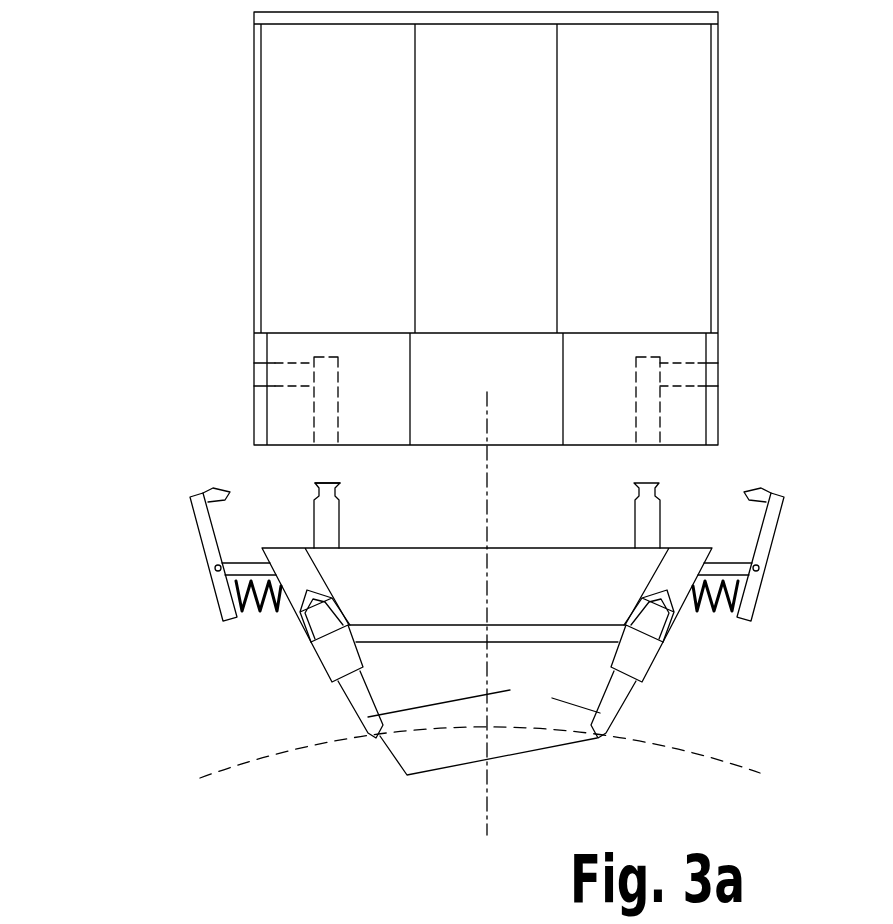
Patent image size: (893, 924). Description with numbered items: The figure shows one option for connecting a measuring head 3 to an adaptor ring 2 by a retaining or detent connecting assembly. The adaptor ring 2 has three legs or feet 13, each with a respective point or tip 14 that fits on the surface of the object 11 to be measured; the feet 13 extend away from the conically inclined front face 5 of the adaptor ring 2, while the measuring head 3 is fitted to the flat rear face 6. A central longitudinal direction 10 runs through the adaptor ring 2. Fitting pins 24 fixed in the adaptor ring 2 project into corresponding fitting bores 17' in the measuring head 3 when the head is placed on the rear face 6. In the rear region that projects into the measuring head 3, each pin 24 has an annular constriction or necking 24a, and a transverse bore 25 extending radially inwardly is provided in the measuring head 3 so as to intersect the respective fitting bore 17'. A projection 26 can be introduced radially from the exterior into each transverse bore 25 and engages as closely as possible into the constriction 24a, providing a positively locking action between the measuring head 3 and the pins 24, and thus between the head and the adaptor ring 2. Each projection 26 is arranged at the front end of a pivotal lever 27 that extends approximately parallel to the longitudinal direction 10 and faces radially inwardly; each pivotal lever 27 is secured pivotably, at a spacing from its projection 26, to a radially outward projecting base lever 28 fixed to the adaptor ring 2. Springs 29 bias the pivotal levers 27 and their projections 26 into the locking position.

The adaptor ring 2 is at (167, 670).
The measuring head 3 is at (255, 157).
The front face 5 is at (667, 635).
The rear face 6 is at (510, 547).
The longitudinal direction 10 is at (487, 412).
The object 11 is at (652, 748).
The feet 13 is at (484, 691).
The tip 14 is at (488, 775).
The fitting bores 17' is at (486, 392).
The fitting pins 24 is at (330, 527).
The annular constriction 24a is at (327, 492).
The transverse bore 25 is at (290, 365).
The projection 26 is at (215, 490).
The pivotal lever 27 is at (208, 528).
The base lever 28 is at (247, 567).
The springs 29 is at (257, 607).